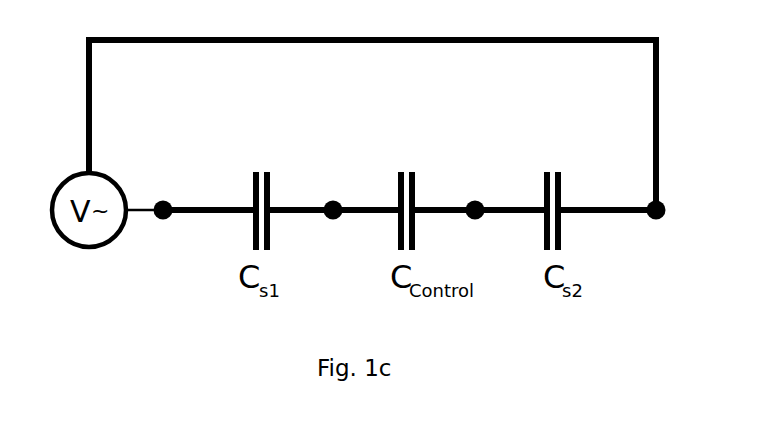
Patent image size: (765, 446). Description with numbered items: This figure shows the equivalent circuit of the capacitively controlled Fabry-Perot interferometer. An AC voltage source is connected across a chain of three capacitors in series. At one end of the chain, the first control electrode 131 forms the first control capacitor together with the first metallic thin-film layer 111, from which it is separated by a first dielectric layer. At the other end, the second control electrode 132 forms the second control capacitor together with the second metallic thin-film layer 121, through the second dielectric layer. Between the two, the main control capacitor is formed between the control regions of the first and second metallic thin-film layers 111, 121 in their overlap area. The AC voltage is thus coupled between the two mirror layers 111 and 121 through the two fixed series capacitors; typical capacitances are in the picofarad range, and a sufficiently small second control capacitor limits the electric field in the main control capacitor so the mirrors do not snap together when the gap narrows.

The first control electrode 131 is at (173, 174).
The first metallic thin-film layer 111 is at (341, 181).
The second metallic thin-film layer 121 is at (479, 185).
The second control electrode 132 is at (625, 181).